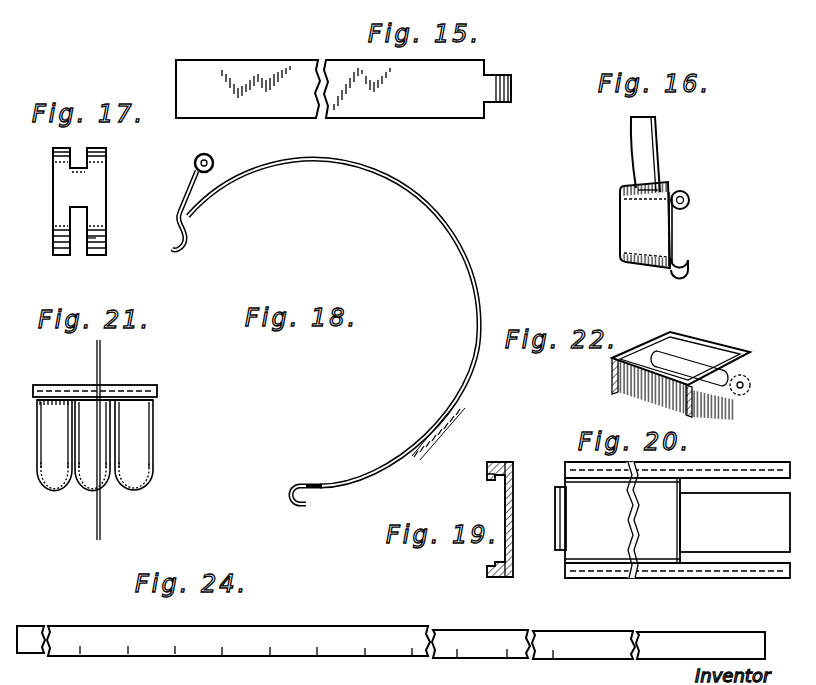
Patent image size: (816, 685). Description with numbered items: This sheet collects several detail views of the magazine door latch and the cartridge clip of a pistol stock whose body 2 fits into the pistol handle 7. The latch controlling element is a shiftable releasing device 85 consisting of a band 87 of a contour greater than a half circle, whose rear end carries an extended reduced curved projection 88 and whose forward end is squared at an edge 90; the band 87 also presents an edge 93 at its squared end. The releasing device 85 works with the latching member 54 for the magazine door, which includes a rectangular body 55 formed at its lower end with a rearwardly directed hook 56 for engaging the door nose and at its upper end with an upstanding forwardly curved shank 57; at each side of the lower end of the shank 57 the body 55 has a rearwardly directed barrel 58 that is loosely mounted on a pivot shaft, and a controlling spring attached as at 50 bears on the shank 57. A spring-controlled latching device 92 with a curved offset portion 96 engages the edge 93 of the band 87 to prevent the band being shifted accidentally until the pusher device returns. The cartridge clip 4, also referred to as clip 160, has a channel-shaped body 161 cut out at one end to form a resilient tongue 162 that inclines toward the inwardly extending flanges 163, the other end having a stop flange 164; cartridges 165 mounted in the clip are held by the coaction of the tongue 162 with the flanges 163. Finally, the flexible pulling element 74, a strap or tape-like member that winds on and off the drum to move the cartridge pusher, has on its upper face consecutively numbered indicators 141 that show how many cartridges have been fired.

In FIG. 22, the body 2 is at (700, 363).
In FIG. 20, the cartridge clip 4 is at (730, 461).
In FIG. 22, the pistol handle 7 is at (769, 407).
In FIG. 16, the attachment point of controlling spring 50 is at (674, 195).
In FIG. 16, the latching member 54 is at (683, 231).
In FIG. 16, the rectangular body 55 is at (645, 240).
In FIG. 16, the hook 56 is at (688, 270).
In FIG. 16, the shank 57 is at (660, 152).
In FIG. 16, the barrel 58 is at (632, 184).
In FIG. 24, the flexible pulling element 74 is at (393, 636).
In FIG. 15, the releasing device 85 is at (285, 68).
In FIG. 18, the releasing device 85 is at (469, 228).
In FIG. 15, the band 87 is at (258, 61).
In FIG. 18, the band 87 is at (480, 276).
In FIG. 15, the projection 88 is at (512, 90).
In FIG. 18, the projection 88 is at (288, 497).
In FIG. 15, the edge 90 is at (484, 116).
In FIG. 18, the edge 90 is at (317, 482).
In FIG. 17, the latching device 92 is at (62, 193).
In FIG. 15, the edge 93 is at (178, 62).
In FIG. 17, the curved offset portion 96 is at (96, 238).
In FIG. 24, the indicators 141 is at (368, 655).
In FIG. 19, the clip 160 is at (522, 507).
In FIG. 21, the channel-shaped body 161 is at (140, 386).
In FIG. 19, the channel-shaped body 161 is at (526, 459).
In FIG. 20, the channel-shaped body 161 is at (692, 579).
In FIG. 20, the resilient tongue 162 is at (735, 522).
In FIG. 19, the flanges 163 is at (490, 480).
In FIG. 20, the stop flange 164 is at (567, 522).
In FIG. 21, the cartridges 165 is at (90, 480).